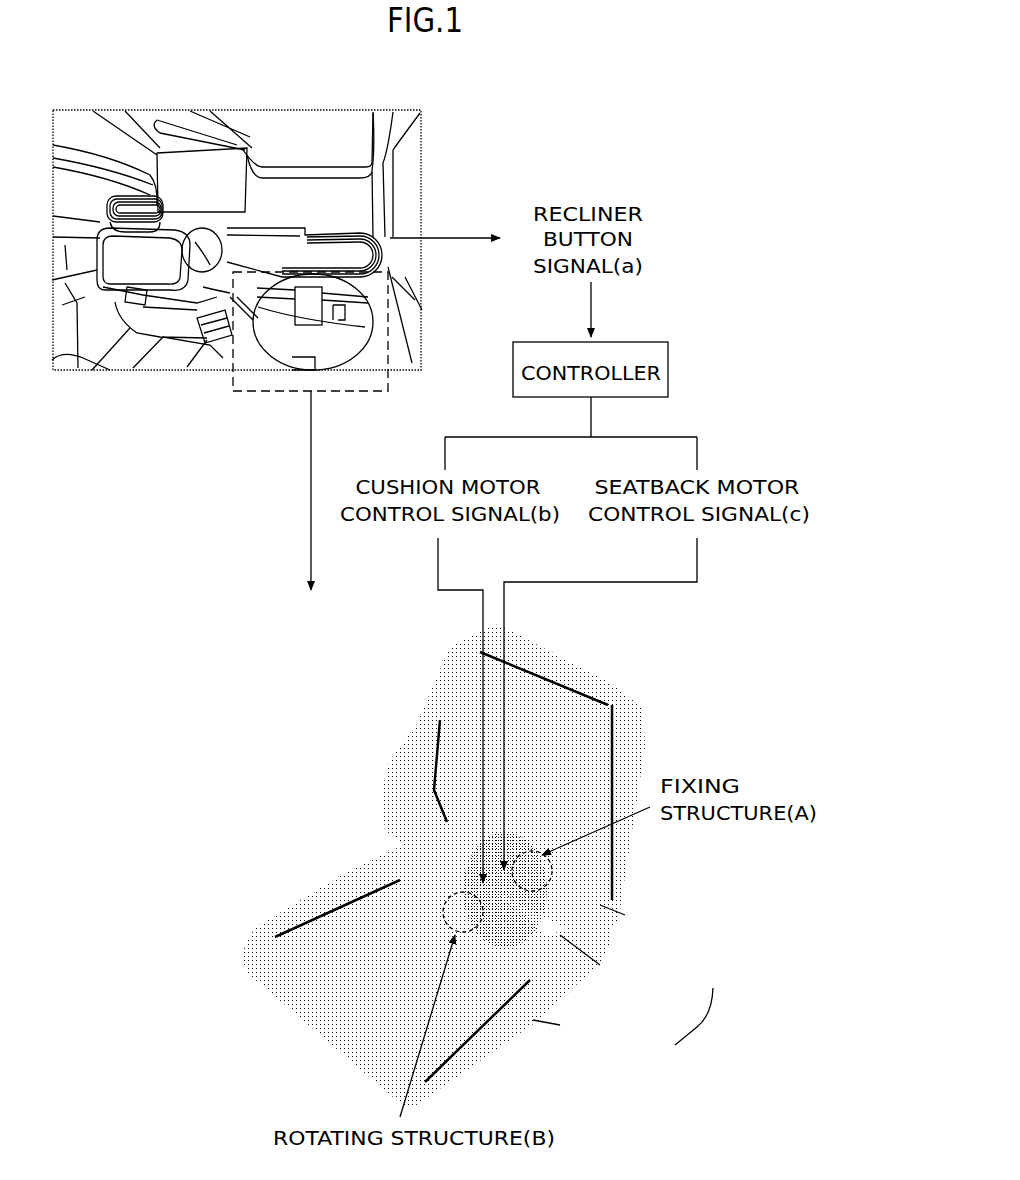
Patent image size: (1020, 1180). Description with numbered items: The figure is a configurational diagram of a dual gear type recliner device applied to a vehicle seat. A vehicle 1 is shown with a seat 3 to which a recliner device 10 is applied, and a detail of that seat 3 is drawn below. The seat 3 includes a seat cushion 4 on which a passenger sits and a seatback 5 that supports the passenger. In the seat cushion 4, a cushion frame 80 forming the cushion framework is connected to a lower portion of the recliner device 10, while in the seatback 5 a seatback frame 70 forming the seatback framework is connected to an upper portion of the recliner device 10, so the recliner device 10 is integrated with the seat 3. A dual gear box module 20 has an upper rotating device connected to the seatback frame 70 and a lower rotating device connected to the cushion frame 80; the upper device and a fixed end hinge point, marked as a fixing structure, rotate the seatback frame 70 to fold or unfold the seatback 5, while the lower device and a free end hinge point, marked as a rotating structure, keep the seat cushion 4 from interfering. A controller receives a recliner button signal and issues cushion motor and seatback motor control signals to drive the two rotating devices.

The vehicle 1 is at (130, 142).
The seat 3 is at (373, 307).
The seat cushion 4 is at (318, 887).
The seatback 5 is at (403, 785).
The recliner device 10 is at (699, 1021).
The dual gear box module 20 is at (600, 965).
The seatback frame 70 is at (610, 930).
The cushion frame 80 is at (560, 1025).